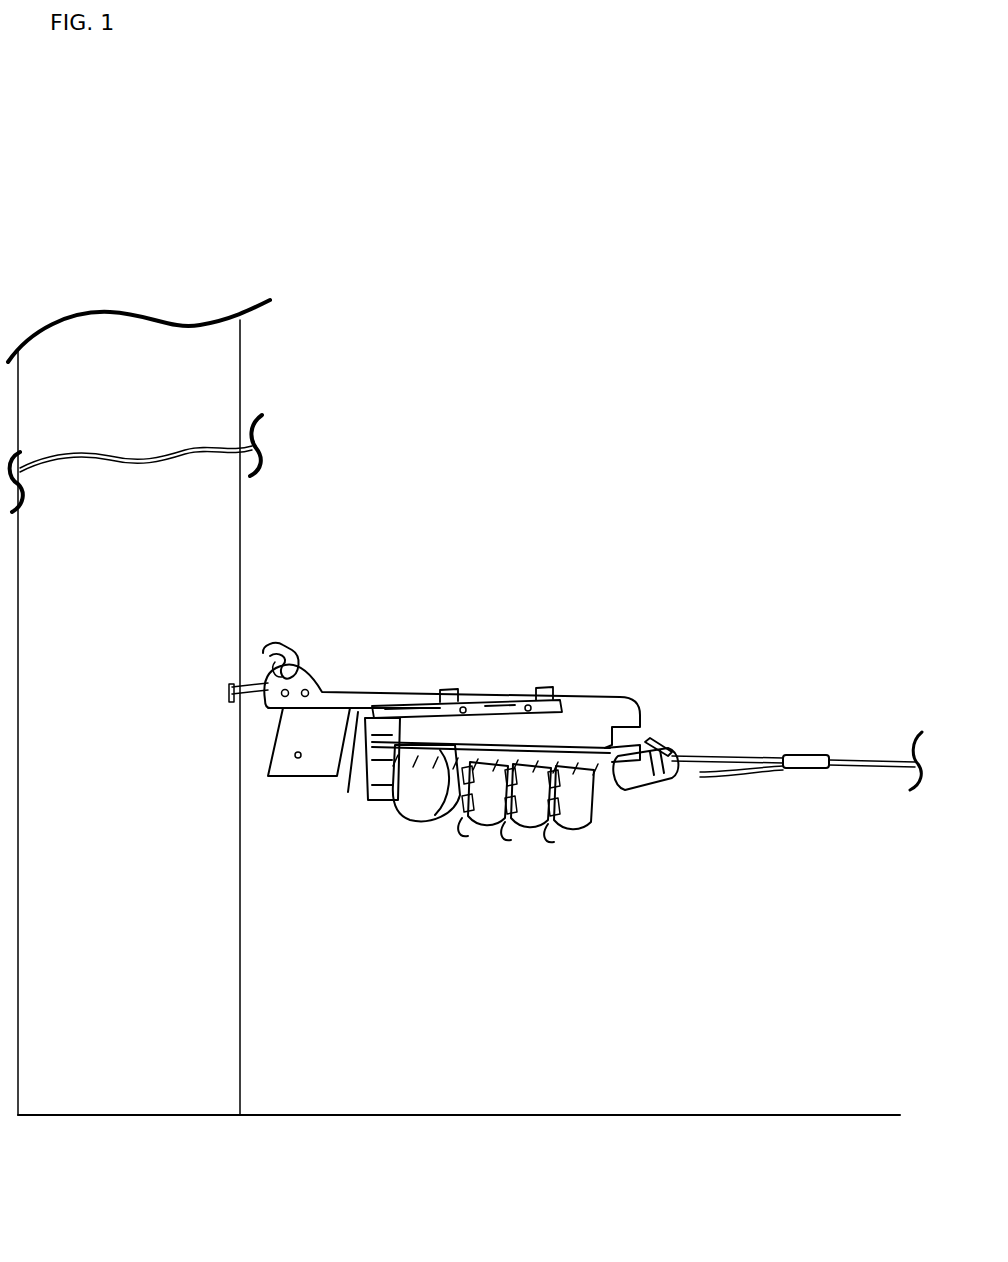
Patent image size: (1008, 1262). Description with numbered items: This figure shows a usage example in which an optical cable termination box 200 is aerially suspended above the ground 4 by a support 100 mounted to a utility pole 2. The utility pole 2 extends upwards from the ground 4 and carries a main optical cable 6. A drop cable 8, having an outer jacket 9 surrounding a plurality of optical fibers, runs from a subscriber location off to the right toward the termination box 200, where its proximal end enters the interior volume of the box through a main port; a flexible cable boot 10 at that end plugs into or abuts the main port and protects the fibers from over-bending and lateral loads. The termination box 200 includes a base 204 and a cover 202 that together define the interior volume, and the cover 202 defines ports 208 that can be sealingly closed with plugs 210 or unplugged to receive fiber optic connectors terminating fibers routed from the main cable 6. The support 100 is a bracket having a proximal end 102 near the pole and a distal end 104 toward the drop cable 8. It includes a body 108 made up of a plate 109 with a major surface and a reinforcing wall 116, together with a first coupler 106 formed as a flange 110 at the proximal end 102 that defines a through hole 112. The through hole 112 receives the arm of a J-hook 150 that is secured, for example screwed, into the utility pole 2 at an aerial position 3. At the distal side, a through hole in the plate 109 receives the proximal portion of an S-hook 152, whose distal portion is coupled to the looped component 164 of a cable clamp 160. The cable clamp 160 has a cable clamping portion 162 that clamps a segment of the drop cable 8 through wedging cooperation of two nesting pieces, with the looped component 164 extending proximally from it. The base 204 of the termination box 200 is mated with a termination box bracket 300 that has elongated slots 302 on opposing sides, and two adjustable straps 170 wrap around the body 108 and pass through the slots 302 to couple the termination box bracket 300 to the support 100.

The utility pole 2 is at (198, 1015).
The aerial position 3 is at (238, 700).
The ground 4 is at (767, 1114).
The main optical cable 6 is at (183, 455).
The drop cable 8 is at (713, 780).
The outer jacket 9 is at (868, 757).
The flexible cable boot 10 is at (655, 780).
The support 100 is at (494, 678).
The proximal end 102 is at (272, 748).
The distal end 104 is at (643, 722).
The first coupler 106 is at (476, 706).
The body 108 is at (320, 778).
The plate 109 is at (315, 750).
The flange 110 is at (310, 685).
The through hole 112 is at (297, 672).
The reinforcing wall 116 is at (593, 705).
The J-hook 150 is at (283, 660).
The S-hook 152 is at (668, 750).
The cable clamp 160 is at (811, 717).
The cable clamping portion 162 is at (815, 757).
The looped component 164 is at (700, 757).
The adjustable straps 170 is at (440, 708).
The optical cable termination box 200 is at (510, 801).
The cover 202 is at (475, 813).
The base 204 is at (405, 740).
The ports 208 is at (592, 800).
The plugs 210 is at (598, 903).
The termination box bracket 300 is at (522, 710).
The elongated slots 302 is at (447, 705).